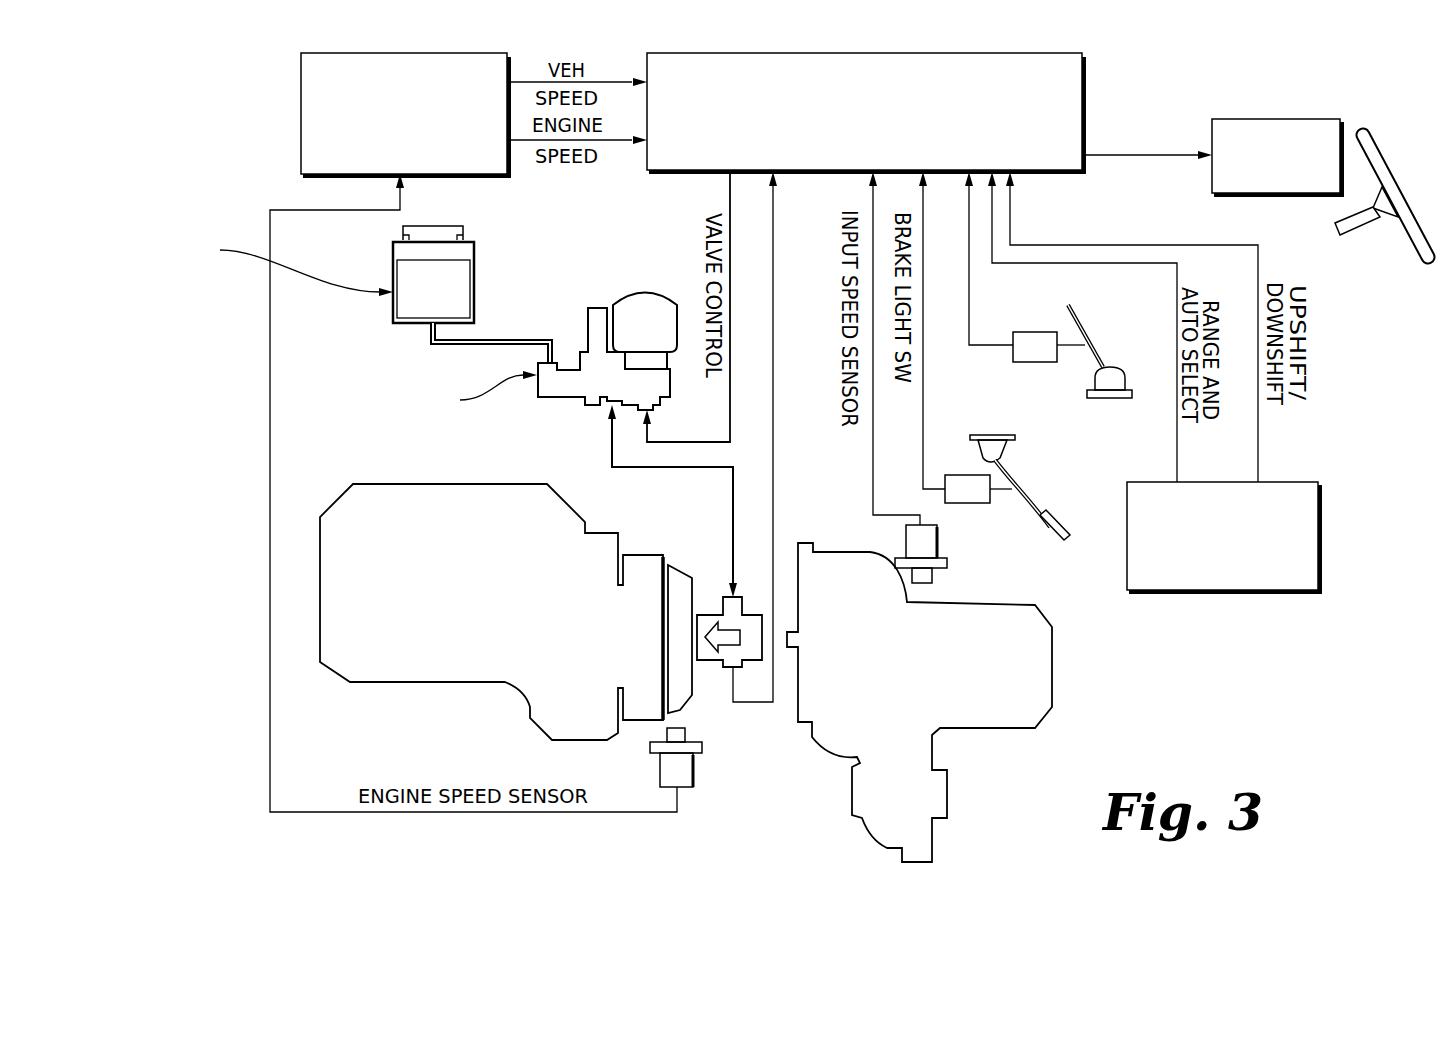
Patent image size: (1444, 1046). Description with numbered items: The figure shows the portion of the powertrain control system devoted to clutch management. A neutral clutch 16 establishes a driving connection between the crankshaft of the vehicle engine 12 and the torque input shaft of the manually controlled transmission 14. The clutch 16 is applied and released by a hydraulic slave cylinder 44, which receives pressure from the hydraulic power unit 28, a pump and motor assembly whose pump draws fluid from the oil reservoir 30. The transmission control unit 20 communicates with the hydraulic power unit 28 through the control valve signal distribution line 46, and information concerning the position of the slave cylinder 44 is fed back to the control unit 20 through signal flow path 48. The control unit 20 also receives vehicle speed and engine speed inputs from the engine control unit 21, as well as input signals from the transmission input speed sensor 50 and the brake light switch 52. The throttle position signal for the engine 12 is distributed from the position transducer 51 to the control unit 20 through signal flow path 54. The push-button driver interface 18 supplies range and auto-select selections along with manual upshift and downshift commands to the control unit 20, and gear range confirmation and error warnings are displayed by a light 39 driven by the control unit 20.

The engine control unit 21 is at (301, 100).
The control unit 20 is at (1083, 92).
The light 39 is at (1253, 118).
The fluid 30 is at (457, 288).
The hydraulic power unit 28 is at (555, 383).
The control valve signal distribution line 46 is at (670, 467).
The vehicle engine 12 is at (512, 563).
The neutral clutch 16 is at (688, 598).
The hydraulic slave cylinder 44 is at (712, 690).
The signal flow path 48 is at (773, 405).
The transmission input speed sensor 50 is at (908, 543).
The brake light switch 52 is at (962, 497).
The signal flow path 54 is at (970, 312).
The position transducer 51 is at (1033, 348).
The push-button driver interface 18 is at (1293, 482).
The transmission 14 is at (915, 640).